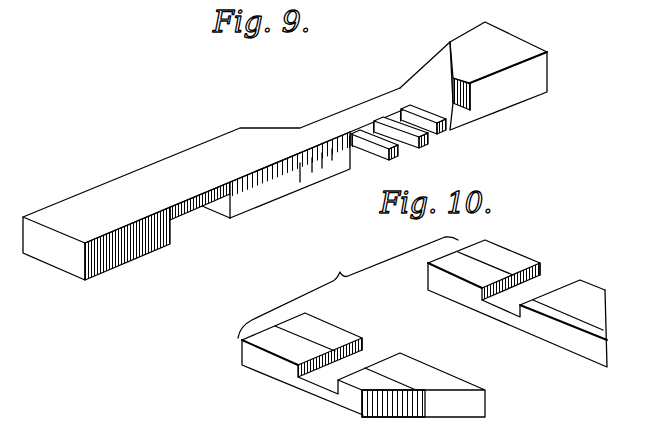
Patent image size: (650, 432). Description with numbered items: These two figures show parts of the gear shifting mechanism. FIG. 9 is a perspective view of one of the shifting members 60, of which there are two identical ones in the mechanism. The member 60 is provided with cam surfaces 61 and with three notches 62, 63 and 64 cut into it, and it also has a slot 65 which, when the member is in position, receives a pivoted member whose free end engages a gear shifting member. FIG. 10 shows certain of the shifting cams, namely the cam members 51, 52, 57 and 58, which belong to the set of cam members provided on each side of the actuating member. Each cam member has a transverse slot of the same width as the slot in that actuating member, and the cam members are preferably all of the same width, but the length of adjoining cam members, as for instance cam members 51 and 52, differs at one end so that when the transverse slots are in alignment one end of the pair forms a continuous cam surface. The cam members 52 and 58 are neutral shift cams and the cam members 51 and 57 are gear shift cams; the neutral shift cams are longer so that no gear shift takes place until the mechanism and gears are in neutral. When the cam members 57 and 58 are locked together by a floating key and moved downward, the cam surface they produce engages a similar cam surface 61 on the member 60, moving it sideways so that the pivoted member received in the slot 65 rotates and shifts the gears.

In FIG. 9, the shifting member 60 is at (211, 184).
In FIG. 9, the cam surfaces 61 is at (267, 128).
In FIG. 9, the notch 62 is at (438, 134).
In FIG. 9, the notch 63 is at (402, 141).
In FIG. 9, the notch 64 is at (371, 157).
In FIG. 9, the slot 65 is at (196, 218).
In FIG. 10, the cam member 51 is at (514, 257).
In FIG. 10, the cam member 52 is at (468, 290).
In FIG. 10, the cam member 57 is at (286, 370).
In FIG. 10, the cam member 58 is at (327, 333).